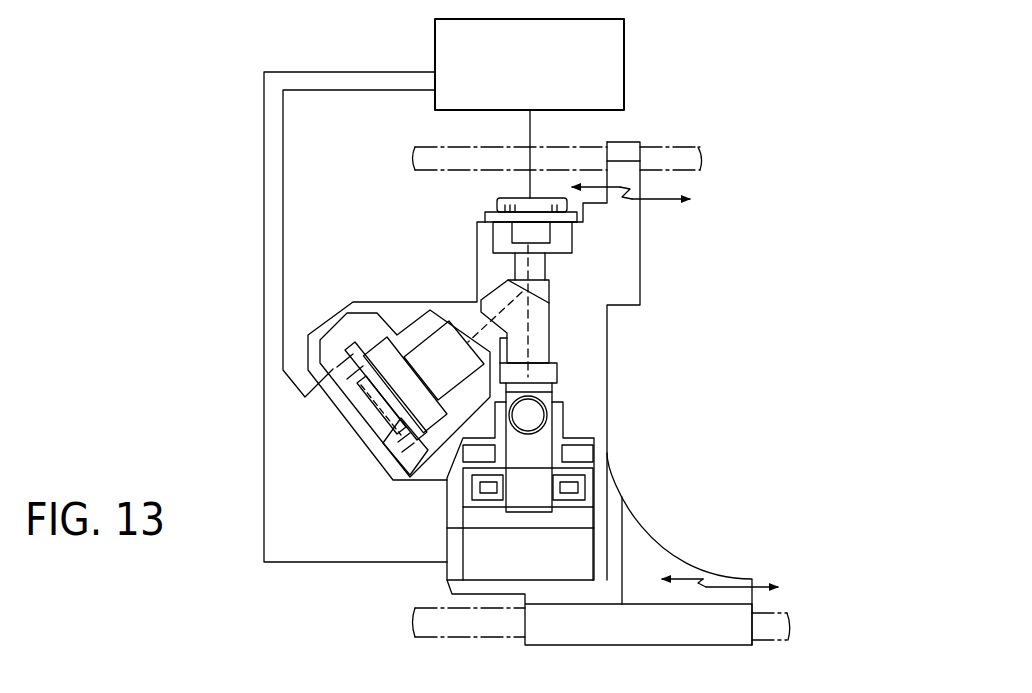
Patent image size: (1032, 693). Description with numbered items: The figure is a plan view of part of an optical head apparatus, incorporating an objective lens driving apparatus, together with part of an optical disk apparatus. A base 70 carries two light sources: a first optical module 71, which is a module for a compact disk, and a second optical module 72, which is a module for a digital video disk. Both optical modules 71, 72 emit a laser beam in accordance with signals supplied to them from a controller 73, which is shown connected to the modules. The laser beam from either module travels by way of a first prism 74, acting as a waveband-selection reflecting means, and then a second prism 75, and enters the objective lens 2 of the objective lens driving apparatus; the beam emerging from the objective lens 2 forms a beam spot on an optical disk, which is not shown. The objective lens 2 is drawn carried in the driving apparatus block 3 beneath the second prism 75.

The objective lens 2 is at (530, 415).
The detector block 3 is at (553, 423).
The base 70 is at (640, 293).
The first optical module 71 is at (572, 236).
The second optical module 72 is at (401, 318).
The controller 73 is at (624, 58).
The first prism 74 is at (545, 318).
The second prism 75 is at (557, 393).